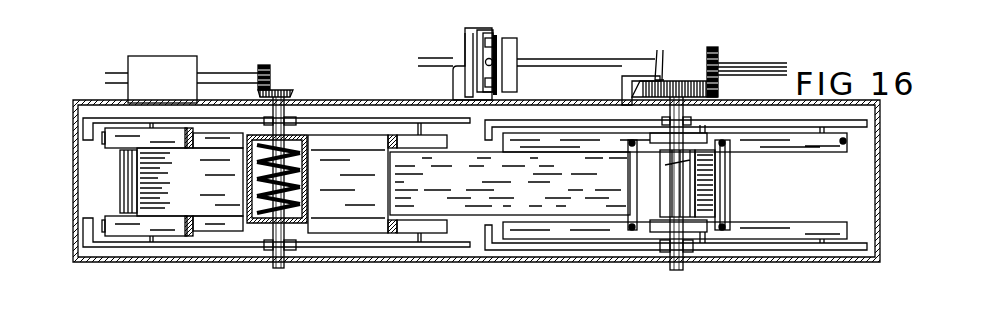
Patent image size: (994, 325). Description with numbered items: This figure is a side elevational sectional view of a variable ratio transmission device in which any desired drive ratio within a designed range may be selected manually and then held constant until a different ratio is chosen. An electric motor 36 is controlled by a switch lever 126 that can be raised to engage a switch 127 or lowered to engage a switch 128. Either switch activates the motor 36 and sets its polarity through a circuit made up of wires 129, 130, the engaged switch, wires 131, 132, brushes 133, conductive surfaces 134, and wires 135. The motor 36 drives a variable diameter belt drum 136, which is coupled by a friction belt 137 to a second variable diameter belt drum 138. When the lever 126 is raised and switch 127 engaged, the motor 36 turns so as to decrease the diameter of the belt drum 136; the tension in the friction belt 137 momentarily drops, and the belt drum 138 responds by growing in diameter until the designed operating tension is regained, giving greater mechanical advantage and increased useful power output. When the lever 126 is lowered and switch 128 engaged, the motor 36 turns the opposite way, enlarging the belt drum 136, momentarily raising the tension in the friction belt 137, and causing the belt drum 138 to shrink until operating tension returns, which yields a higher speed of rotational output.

The electric motor 36 is at (672, 188).
The switch lever 126 is at (498, 62).
The switch 127 is at (492, 37).
The switch 128 is at (517, 92).
The wire 129 is at (430, 57).
The wire 130 is at (440, 67).
The wire 131 is at (600, 58).
The wire 132 is at (615, 60).
The brushes 133 is at (658, 60).
The conductive surfaces 134 is at (688, 80).
The wires 135 is at (658, 170).
The variable diameter belt drum 136 is at (828, 243).
The friction belt 137 is at (510, 191).
The variable diameter belt drum 138 is at (180, 247).